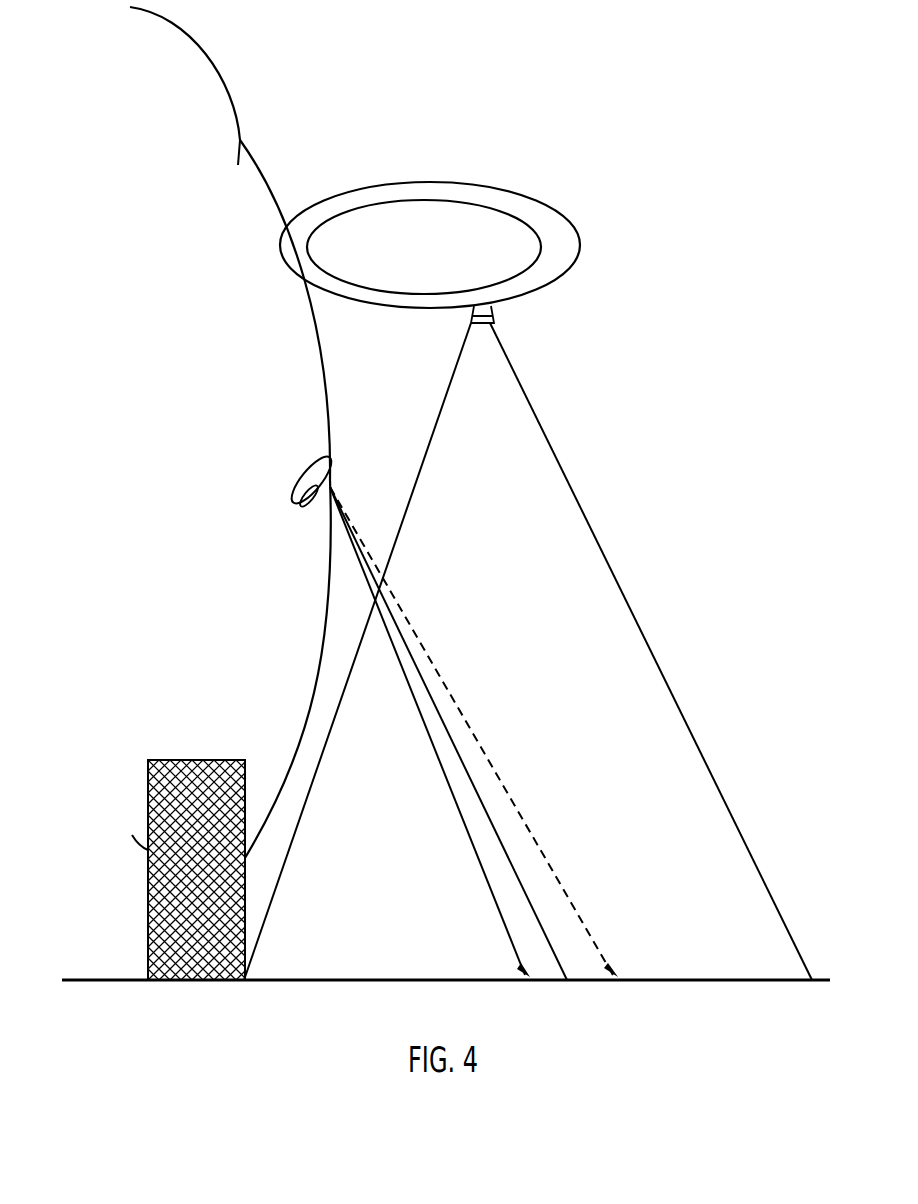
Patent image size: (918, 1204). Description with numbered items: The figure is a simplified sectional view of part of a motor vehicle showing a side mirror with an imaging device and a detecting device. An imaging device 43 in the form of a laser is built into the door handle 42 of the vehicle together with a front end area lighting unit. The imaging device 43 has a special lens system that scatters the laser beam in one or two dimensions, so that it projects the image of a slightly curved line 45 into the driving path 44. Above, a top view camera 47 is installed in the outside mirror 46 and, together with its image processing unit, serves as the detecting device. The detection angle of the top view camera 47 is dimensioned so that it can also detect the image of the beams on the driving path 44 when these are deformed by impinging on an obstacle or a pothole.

The door handle 42 is at (312, 481).
The imaging device 43 is at (300, 500).
The driving path 44 is at (312, 980).
The slightly curved line 45 is at (508, 790).
The outside mirror 46 is at (513, 202).
The top view camera 47 is at (493, 313).